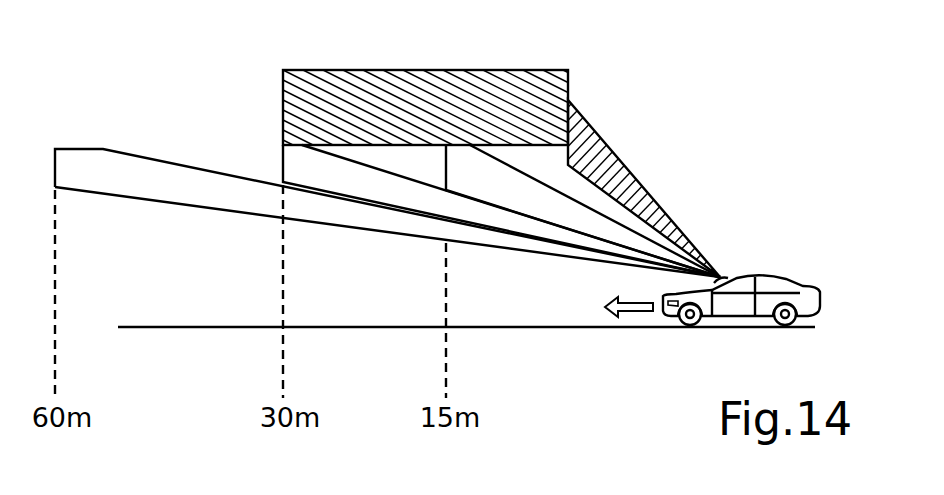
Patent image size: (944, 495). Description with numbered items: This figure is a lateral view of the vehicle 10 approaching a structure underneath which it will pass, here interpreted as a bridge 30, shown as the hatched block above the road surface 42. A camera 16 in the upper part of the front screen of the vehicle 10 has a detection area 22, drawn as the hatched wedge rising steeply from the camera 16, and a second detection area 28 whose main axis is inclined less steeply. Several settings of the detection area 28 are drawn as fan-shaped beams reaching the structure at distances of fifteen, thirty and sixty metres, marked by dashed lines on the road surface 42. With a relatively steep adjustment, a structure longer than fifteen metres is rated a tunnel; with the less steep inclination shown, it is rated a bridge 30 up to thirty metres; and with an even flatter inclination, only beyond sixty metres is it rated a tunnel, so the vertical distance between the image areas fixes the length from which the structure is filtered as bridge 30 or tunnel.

The vehicle 10 is at (776, 249).
The camera 16 is at (730, 275).
The detection area 22 is at (600, 157).
The detection area 28 is at (198, 180).
The bridge 30 is at (352, 92).
The road surface 42 is at (323, 327).